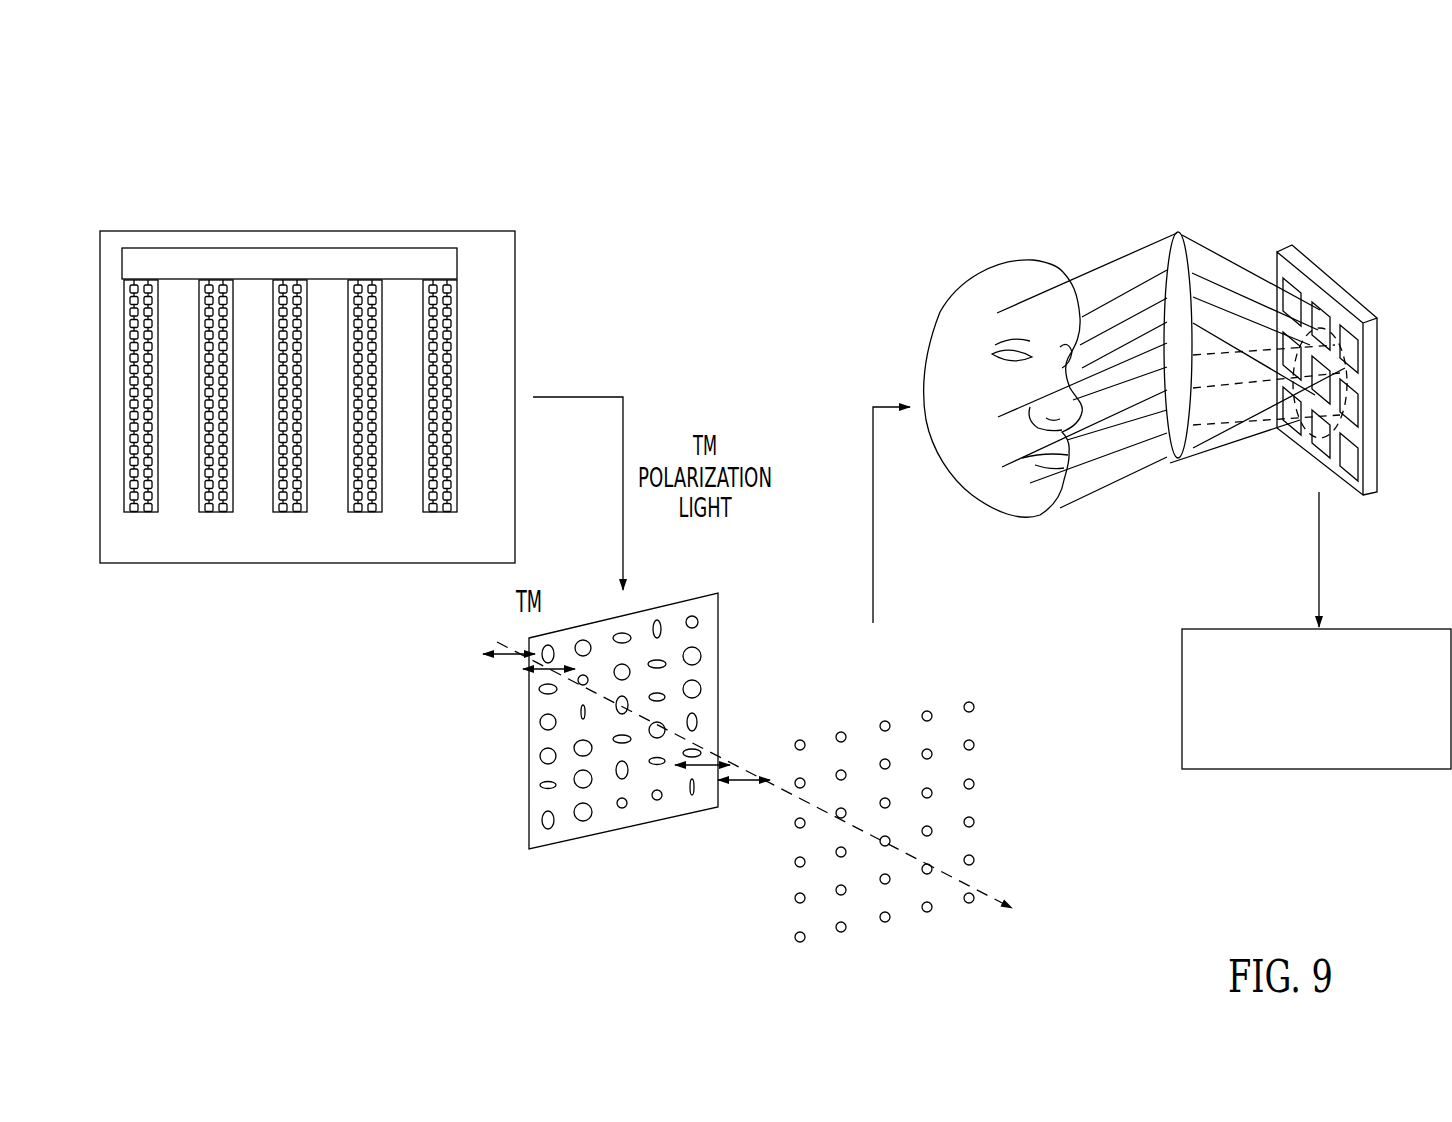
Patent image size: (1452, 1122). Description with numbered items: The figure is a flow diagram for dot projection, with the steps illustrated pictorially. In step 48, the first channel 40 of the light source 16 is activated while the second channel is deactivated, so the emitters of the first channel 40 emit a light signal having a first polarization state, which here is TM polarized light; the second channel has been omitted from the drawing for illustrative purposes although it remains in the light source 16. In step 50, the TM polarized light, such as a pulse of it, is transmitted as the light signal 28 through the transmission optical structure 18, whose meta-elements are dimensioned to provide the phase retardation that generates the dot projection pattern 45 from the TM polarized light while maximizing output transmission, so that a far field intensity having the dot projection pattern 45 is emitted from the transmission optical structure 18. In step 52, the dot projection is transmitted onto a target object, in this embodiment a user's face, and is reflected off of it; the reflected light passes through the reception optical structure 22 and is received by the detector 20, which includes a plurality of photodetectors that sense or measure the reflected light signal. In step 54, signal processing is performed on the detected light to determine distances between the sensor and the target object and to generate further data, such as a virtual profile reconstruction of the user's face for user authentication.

The step of activating the first channel 48 is at (184, 126).
The light source 16 is at (145, 216).
The first channel 40 is at (438, 257).
The transmission optical structure 18 is at (542, 867).
The step of transmitting TM polarized light 50 is at (368, 844).
The light signal 28 is at (980, 893).
The dot projection pattern 45 is at (770, 935).
The step of projecting onto target object 52 is at (963, 218).
The reception optical structure 22 is at (1180, 233).
The detector 20 is at (1306, 290).
The step of signal processing 54 is at (1286, 800).